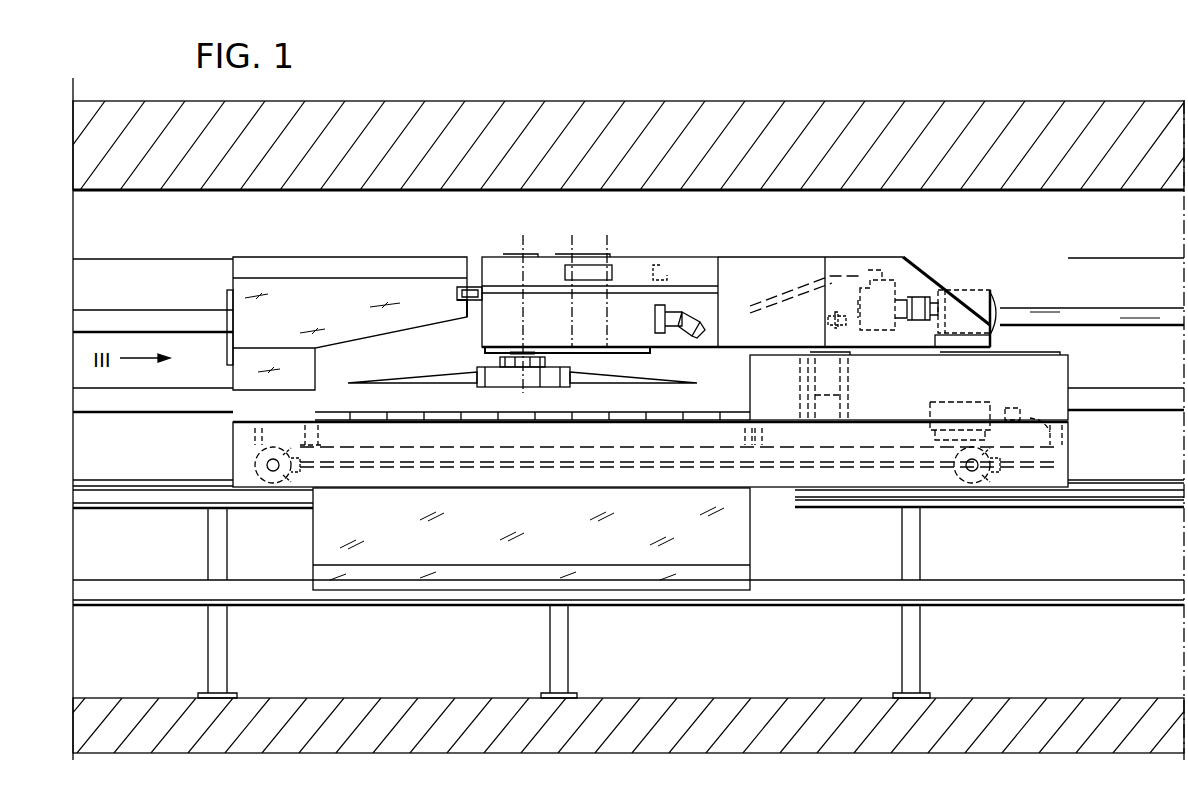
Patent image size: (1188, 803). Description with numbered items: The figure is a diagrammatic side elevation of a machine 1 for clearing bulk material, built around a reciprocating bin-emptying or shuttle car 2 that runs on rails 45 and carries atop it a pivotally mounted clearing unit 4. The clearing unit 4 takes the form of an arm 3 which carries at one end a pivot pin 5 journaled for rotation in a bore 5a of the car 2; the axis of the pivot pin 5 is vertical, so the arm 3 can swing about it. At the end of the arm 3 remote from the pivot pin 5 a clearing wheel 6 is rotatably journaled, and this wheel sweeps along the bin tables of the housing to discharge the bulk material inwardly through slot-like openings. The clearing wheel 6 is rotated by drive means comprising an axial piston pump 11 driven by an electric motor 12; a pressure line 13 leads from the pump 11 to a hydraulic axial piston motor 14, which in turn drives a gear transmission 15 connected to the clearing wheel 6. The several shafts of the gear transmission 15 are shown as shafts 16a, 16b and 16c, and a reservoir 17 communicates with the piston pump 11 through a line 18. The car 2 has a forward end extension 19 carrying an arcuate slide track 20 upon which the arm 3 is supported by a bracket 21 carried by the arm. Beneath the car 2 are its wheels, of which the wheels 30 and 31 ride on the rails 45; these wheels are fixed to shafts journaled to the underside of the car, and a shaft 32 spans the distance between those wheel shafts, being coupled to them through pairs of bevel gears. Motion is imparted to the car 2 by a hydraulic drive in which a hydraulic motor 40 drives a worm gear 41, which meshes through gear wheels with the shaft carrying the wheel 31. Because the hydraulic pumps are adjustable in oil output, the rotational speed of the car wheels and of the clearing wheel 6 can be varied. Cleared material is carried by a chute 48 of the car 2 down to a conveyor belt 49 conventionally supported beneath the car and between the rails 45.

The machine 1 is at (630, 98).
The bin-emptying car 2 is at (1093, 326).
The arm 3 is at (822, 212).
The clearing unit 4 is at (670, 262).
The pivot pin 5 is at (832, 380).
The bore 5a is at (806, 400).
The clearing wheel 6 is at (455, 378).
The axial piston pump 11 is at (872, 300).
The electric motor 12 is at (964, 296).
The pressure line 13 is at (840, 272).
The hydraulic axial piston motor 14 is at (676, 318).
The gear transmission 15 is at (542, 272).
The shaft 16a is at (606, 268).
The shaft 16b is at (578, 270).
The shaft 16c is at (526, 246).
The reservoir 17 is at (750, 268).
The line 18 is at (828, 320).
The forward end extension 19 is at (298, 288).
The arcuate slide track 20 is at (462, 318).
The bracket 21 is at (477, 290).
The wheel 30 is at (270, 478).
The wheel 31 is at (970, 478).
The shaft 32 is at (878, 470).
The hydraulic motor 40 is at (1022, 412).
The worm gear 41 is at (978, 408).
The rails 45 is at (1130, 508).
The chute 48 is at (752, 550).
The conveyor belt 49 is at (808, 596).